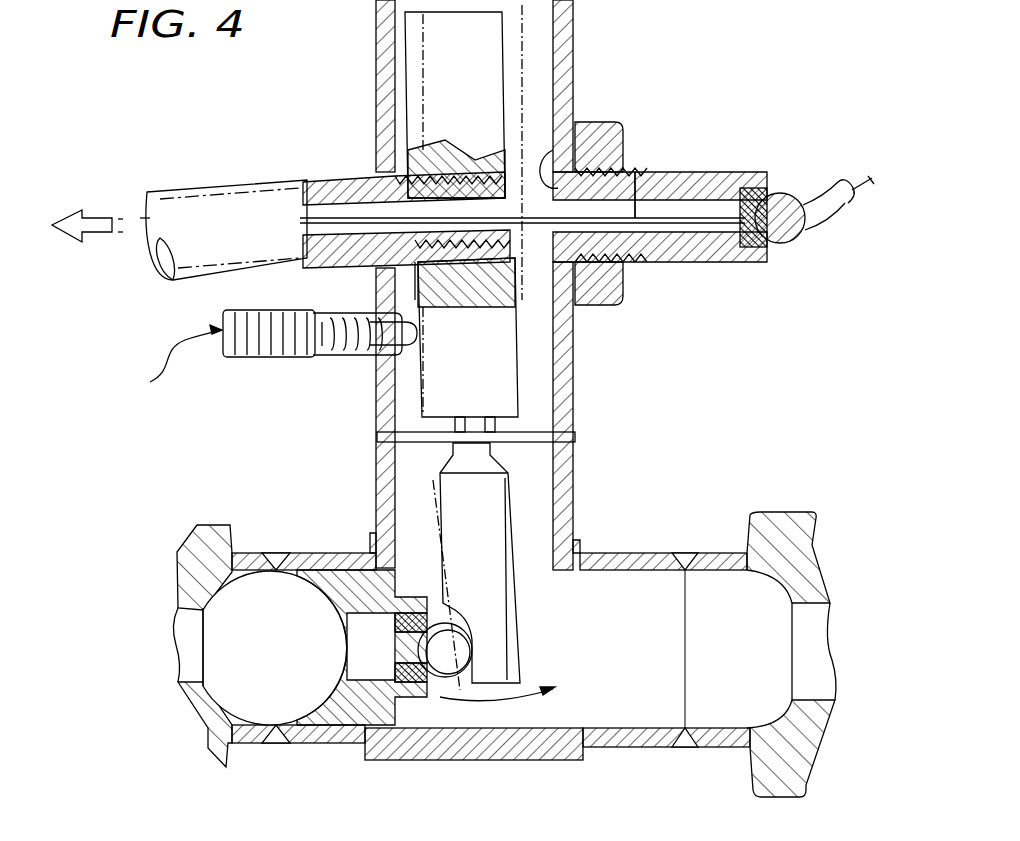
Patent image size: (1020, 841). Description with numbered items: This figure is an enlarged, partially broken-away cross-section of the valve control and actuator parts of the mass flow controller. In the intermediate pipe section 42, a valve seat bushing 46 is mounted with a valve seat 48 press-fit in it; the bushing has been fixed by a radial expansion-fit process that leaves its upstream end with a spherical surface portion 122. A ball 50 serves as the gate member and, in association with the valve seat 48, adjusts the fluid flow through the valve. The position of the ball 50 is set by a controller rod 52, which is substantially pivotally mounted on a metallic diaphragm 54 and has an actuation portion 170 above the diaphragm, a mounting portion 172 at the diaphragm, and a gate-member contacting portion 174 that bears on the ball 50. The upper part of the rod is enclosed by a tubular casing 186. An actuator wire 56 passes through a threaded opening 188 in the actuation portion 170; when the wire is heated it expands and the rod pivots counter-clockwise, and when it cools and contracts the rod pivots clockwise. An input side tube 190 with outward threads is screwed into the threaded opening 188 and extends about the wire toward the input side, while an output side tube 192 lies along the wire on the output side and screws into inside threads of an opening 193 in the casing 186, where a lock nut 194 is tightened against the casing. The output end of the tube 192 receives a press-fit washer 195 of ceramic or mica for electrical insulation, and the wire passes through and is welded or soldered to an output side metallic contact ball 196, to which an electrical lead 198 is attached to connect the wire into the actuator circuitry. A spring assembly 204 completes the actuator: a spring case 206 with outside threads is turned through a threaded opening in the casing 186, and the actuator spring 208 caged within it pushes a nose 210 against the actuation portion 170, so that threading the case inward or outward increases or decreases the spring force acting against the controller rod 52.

The intermediate pipe section 42 is at (575, 500).
The valve seat bushing 46 is at (340, 712).
The valve seat 48 is at (412, 690).
The ball 50 is at (450, 655).
The controller rod 52 is at (517, 378).
The metallic diaphragm 54 is at (395, 442).
The actuator wire 56 is at (635, 172).
The spherical surface portion 122 is at (305, 695).
The actuation portion 170 is at (505, 78).
The mounting portion 172 is at (505, 445).
The gate-member contacting portion 174 is at (523, 622).
The tubular casing 186 is at (376, 62).
The threaded opening 188 is at (370, 195).
The tube 190 is at (197, 200).
The output side tube 192 is at (730, 172).
The opening 193 is at (553, 162).
The lock nut 194 is at (625, 128).
The press-fit washer 195 is at (752, 250).
The output side metallic contact ball 196 is at (792, 245).
The cable 198 is at (845, 185).
The spring assembly 204 is at (152, 369).
The spring case 206 is at (252, 357).
The actuator spring 208 is at (340, 320).
The nose 210 is at (425, 335).